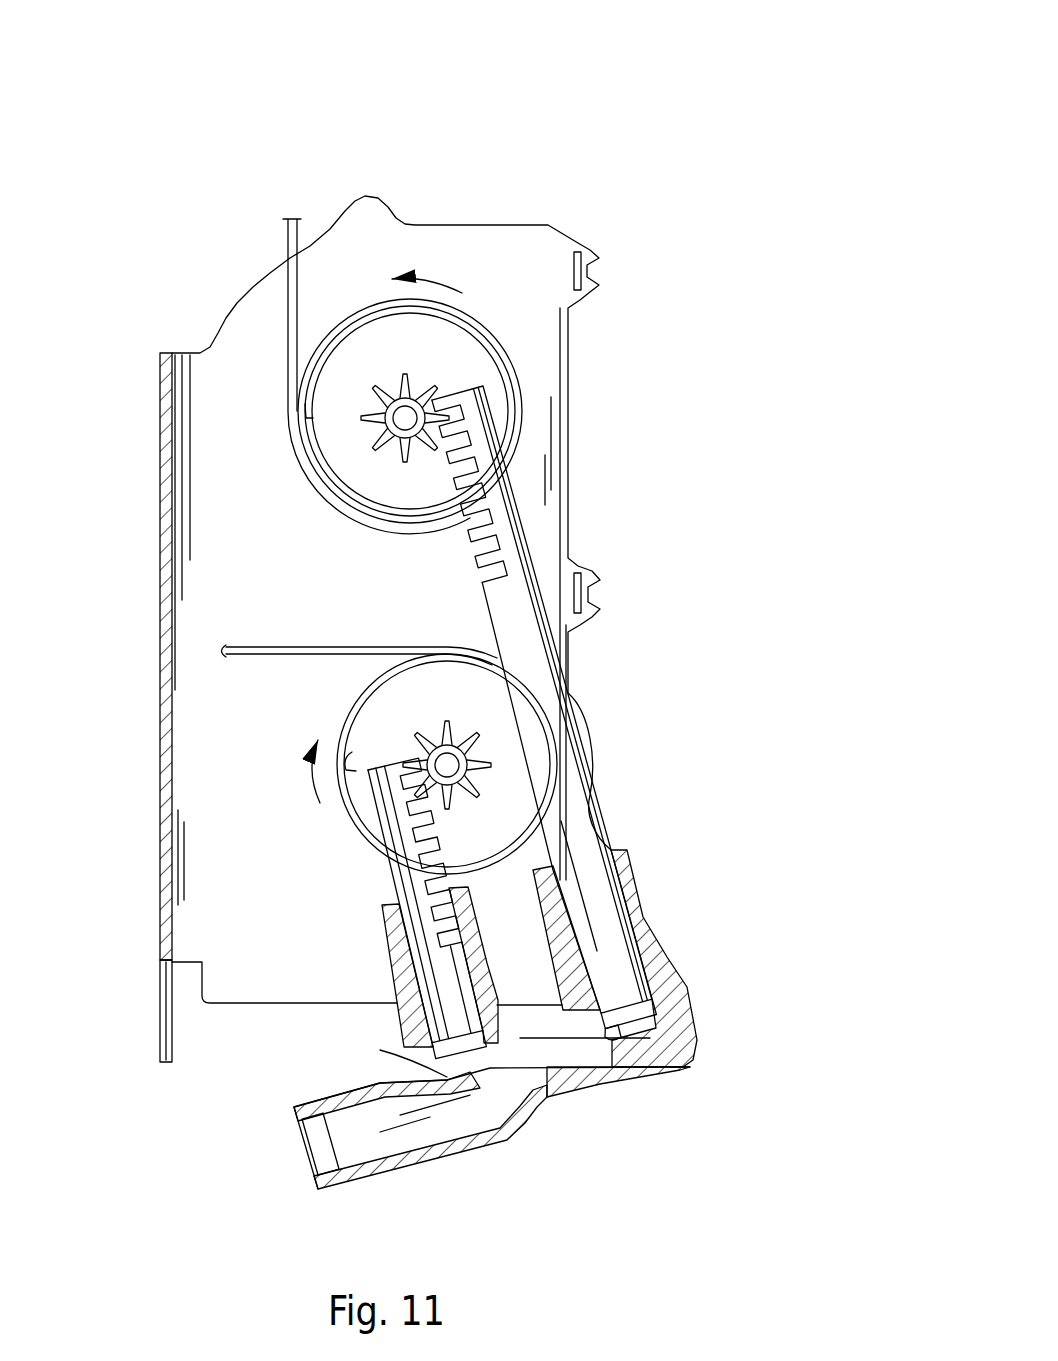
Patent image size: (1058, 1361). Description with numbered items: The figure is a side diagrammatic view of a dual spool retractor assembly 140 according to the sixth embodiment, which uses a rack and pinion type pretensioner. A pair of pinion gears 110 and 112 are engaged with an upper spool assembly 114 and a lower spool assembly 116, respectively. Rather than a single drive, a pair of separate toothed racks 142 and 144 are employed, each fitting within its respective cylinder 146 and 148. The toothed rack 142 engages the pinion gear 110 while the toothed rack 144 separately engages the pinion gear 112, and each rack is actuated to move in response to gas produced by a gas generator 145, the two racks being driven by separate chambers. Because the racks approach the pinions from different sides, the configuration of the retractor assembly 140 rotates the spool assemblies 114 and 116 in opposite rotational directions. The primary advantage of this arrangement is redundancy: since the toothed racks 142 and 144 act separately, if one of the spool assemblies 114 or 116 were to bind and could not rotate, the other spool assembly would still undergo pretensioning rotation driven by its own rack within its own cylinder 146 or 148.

The dual spool retractor assembly 140 is at (627, 83).
The pinion gear 110 is at (431, 392).
The pinion gear 112 is at (477, 750).
The upper spool assembly 114 is at (505, 356).
The lower spool assembly 116 is at (502, 805).
The toothed rack 142 is at (517, 478).
The toothed rack 144 is at (386, 886).
The gas generator 145 is at (300, 1148).
The cylinder 146 is at (610, 912).
The cylinder 148 is at (443, 1037).